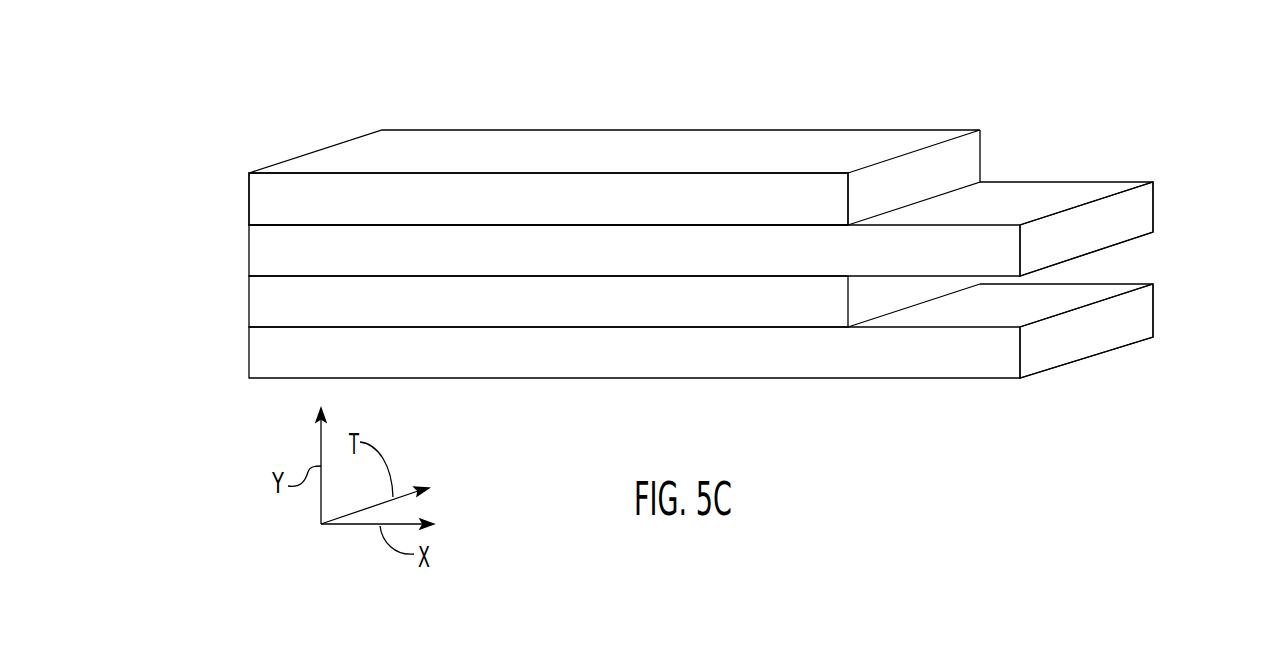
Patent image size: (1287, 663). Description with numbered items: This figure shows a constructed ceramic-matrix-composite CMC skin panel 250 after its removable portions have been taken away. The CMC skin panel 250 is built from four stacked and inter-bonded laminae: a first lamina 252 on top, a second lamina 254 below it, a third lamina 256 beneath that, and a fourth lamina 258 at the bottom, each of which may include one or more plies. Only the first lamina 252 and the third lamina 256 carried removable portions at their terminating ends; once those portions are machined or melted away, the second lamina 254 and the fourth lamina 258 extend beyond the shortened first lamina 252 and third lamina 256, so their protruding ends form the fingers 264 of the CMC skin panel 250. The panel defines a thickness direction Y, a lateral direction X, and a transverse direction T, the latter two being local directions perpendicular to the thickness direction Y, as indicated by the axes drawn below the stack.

The CMC skin panel 250 is at (912, 68).
The first lamina 252 is at (249, 192).
The second lamina 254 is at (249, 252).
The third lamina 256 is at (249, 308).
The fourth lamina 258 is at (249, 367).
The fingers 264 is at (1137, 210).